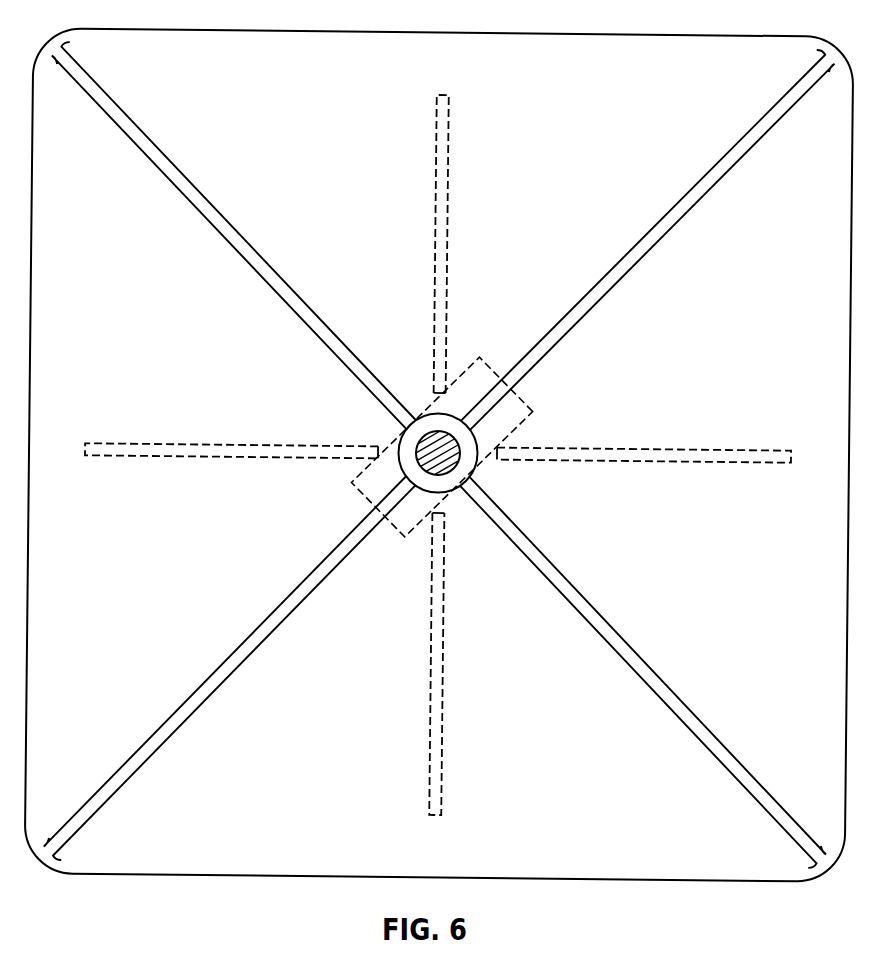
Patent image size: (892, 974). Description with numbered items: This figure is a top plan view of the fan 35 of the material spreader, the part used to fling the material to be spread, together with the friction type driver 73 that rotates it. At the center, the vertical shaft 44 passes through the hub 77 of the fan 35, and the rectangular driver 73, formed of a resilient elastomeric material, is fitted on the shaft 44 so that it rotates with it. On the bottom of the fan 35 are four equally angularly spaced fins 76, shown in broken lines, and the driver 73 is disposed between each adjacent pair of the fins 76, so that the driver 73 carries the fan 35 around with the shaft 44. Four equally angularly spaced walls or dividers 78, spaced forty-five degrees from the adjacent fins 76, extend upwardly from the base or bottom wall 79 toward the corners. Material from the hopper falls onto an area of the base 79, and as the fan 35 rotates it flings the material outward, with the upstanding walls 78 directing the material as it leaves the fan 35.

The fan 35 is at (272, 882).
The walls or dividers 78 is at (226, 684).
The fins 76 is at (444, 697).
The driver 73 is at (511, 342).
The hub 77 is at (445, 414).
The vertical shaft 44 is at (411, 460).
The base or bottom wall 79 is at (605, 788).